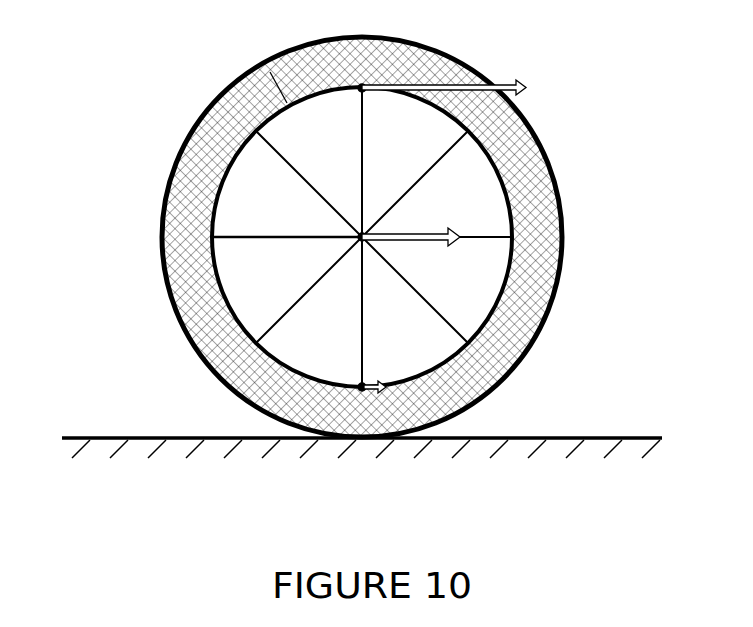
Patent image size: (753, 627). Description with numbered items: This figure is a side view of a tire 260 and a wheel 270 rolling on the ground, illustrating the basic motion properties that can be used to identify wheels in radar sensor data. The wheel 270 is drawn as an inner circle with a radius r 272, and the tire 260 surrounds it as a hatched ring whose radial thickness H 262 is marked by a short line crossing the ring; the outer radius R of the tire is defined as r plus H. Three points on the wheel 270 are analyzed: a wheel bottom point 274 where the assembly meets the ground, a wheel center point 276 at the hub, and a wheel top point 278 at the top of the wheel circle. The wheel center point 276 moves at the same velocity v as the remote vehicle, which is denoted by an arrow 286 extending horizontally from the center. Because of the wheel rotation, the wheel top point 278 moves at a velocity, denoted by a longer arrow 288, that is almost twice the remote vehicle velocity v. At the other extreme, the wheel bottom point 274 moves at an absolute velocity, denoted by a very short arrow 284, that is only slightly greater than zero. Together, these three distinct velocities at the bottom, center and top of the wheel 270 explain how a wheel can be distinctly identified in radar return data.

The tire 260 is at (168, 197).
The thickness H 262 is at (270, 72).
The wheel 270 is at (207, 326).
The radius r 272 is at (230, 236).
The wheel bottom point 274 is at (360, 384).
The wheel center point 276 is at (360, 239).
The wheel top point 278 is at (360, 88).
The arrow 284 is at (372, 382).
The arrow 286 is at (417, 233).
The arrow 288 is at (453, 84).